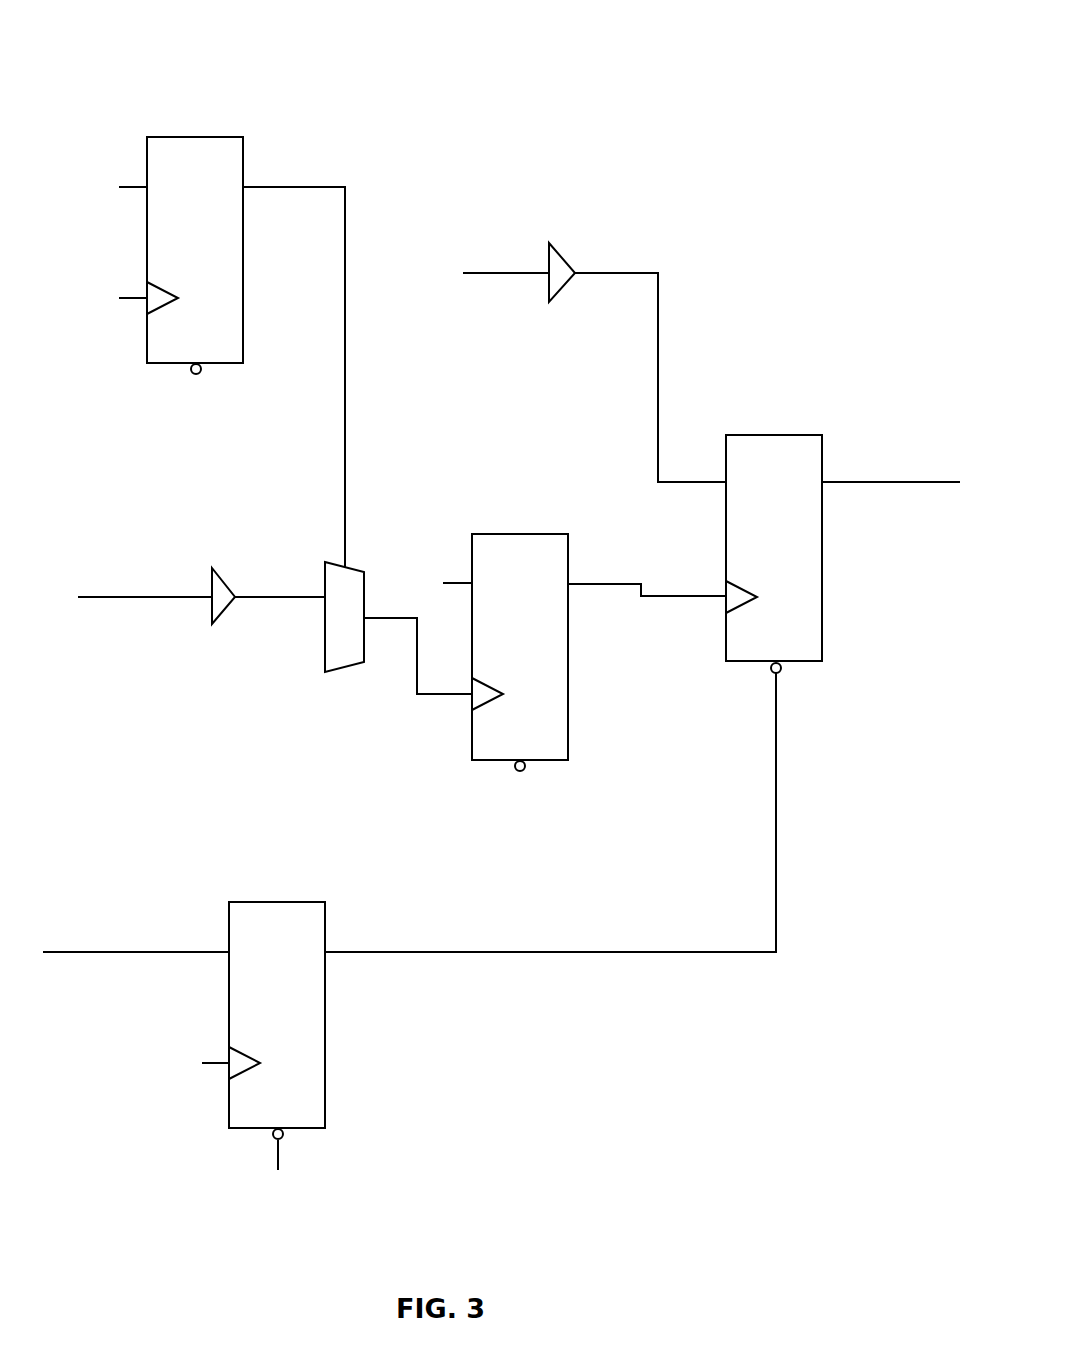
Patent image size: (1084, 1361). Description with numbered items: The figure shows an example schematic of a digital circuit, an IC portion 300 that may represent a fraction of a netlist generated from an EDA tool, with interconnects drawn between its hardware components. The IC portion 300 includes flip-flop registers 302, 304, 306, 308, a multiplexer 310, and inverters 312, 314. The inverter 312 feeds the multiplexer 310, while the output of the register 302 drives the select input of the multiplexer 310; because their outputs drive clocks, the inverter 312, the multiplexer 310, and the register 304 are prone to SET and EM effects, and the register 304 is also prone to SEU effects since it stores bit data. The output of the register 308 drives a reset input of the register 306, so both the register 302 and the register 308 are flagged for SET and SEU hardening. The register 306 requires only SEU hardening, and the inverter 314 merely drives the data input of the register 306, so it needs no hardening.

The IC portion 300 is at (683, 78).
The flip-flop register 302 is at (207, 137).
The flip-flop register 304 is at (527, 534).
The flip-flop register 306 is at (785, 435).
The flip-flop register 308 is at (288, 902).
The multiplexer 310 is at (359, 569).
The inverter 312 is at (227, 584).
The inverter 314 is at (566, 259).